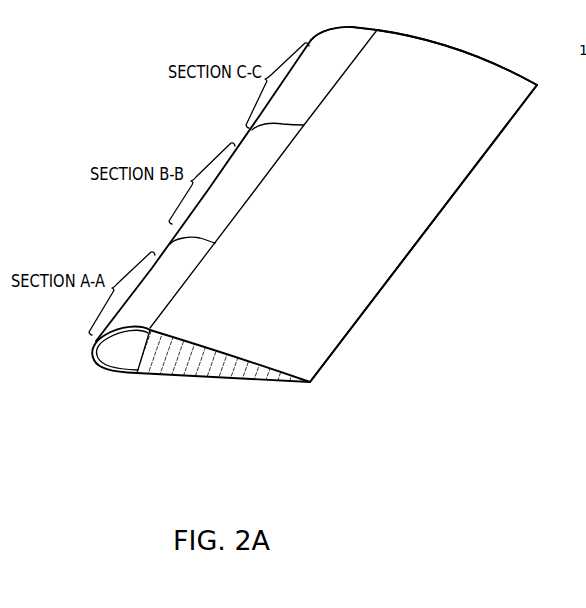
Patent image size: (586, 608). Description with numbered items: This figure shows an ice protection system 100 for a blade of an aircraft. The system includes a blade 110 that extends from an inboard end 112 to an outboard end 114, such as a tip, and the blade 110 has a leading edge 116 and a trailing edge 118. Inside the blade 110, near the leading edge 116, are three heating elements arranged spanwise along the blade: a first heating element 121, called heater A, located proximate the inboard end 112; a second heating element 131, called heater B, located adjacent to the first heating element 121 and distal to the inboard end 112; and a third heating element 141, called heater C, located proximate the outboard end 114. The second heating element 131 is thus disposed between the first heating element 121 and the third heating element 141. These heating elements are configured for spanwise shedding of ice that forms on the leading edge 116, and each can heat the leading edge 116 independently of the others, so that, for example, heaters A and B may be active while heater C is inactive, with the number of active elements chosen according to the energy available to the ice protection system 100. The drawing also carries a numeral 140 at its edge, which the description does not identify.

The ice protection system 100 is at (512, 262).
The blade 110 is at (372, 214).
The inboard end 112 is at (205, 369).
The outboard end 114 is at (467, 55).
The leading edge 116 is at (95, 348).
The trailing edge 118 is at (348, 334).
The first heating element 121 is at (208, 298).
The second heating element 131 is at (288, 193).
The third heating element 141 is at (365, 89).
The component (truncated numeral) 140 is at (579, 417).